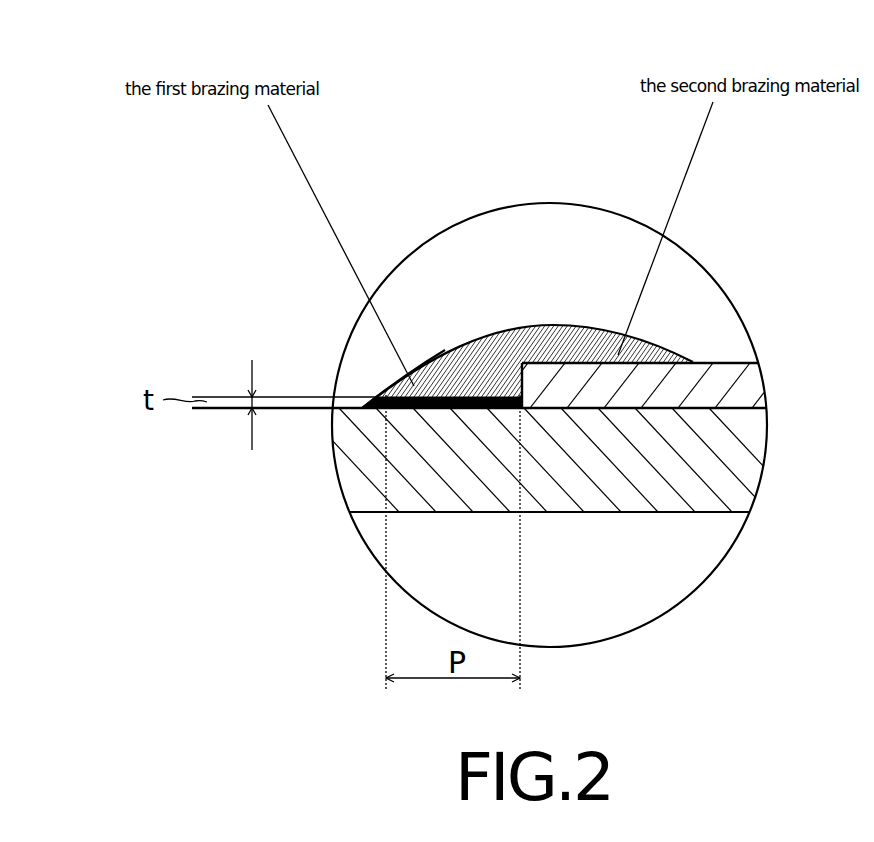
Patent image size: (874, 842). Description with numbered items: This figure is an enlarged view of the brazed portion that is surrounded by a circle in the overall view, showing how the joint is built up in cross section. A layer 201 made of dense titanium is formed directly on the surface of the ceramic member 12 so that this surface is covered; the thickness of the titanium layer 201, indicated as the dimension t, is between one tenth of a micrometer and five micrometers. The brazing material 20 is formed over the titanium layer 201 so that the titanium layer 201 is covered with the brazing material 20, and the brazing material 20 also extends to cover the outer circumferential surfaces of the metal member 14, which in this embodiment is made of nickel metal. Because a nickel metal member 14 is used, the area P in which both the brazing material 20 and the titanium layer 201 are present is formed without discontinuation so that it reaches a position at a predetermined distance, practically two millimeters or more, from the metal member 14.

The ceramic member 12 is at (362, 428).
The metal member 14 is at (697, 380).
The brazing material 20 is at (576, 328).
The titanium layer 201 is at (427, 400).